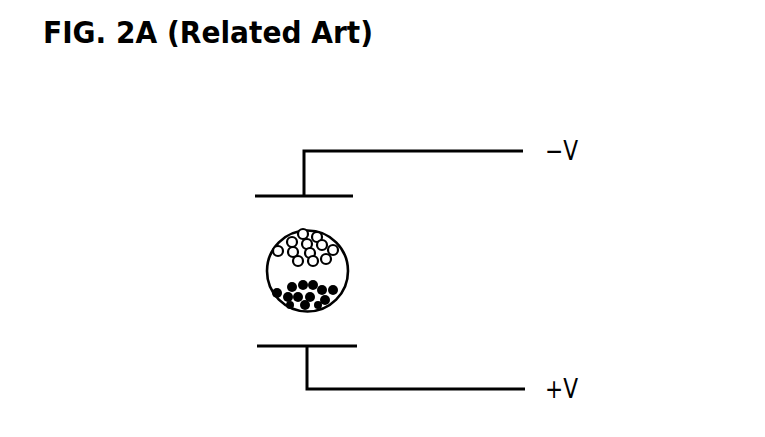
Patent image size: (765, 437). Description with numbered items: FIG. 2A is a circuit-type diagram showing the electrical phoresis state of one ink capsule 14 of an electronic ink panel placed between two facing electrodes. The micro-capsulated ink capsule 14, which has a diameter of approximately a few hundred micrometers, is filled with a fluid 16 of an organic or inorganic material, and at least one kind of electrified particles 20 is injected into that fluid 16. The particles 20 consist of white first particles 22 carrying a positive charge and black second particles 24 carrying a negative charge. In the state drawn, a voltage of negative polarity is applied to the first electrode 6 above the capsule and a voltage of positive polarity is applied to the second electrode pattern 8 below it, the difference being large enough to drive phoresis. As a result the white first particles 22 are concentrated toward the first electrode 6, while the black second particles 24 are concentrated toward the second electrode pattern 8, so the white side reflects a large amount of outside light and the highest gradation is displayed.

The first electrode 6 is at (270, 195).
The second electrode pattern 8 is at (281, 348).
The ink capsule 14 is at (276, 262).
The fluid 16 is at (276, 282).
The electrified particles 20 is at (367, 267).
The white first particles 22 is at (335, 240).
The black second particles 24 is at (345, 287).